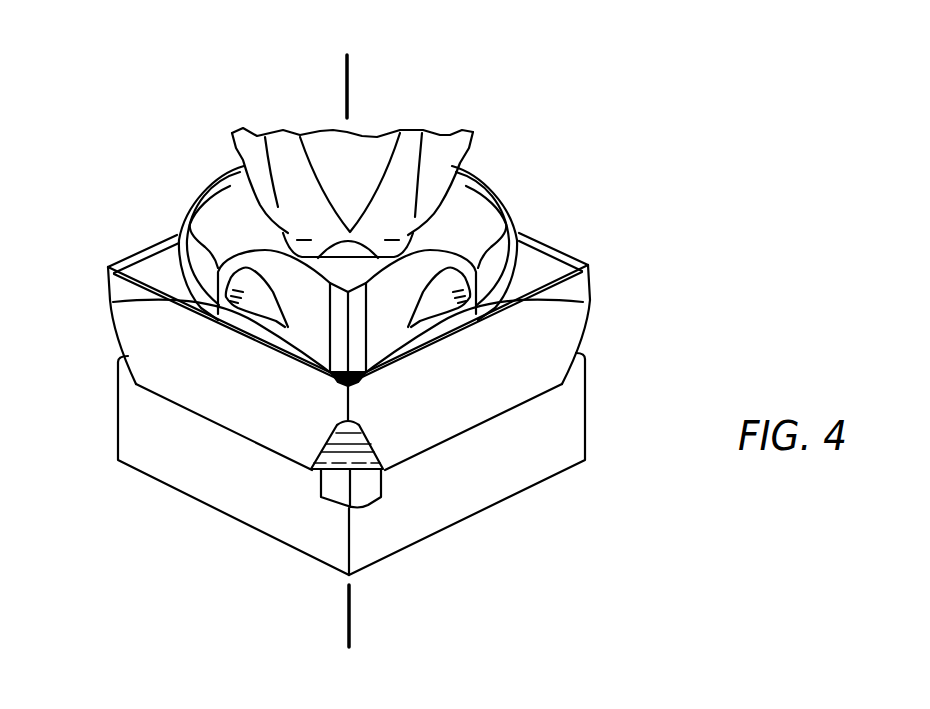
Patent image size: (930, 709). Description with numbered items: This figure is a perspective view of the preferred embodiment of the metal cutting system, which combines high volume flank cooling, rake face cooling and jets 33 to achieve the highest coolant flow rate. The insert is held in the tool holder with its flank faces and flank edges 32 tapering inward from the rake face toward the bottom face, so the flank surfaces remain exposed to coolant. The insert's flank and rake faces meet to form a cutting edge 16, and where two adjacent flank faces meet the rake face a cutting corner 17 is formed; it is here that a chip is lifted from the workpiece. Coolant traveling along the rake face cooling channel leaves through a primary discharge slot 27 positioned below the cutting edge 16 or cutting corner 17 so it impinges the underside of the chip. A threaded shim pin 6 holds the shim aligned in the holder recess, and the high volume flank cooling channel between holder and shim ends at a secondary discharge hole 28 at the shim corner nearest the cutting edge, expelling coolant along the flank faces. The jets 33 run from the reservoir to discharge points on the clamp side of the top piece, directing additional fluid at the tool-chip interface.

The cutting edge 16 is at (113, 303).
The cutting corner 17 is at (347, 395).
The primary discharge slot 27 is at (352, 386).
The secondary discharge hole 28 is at (362, 504).
The flank edge 32 is at (358, 455).
The jets 33 is at (245, 278).
The shim pin 6 is at (257, 628).